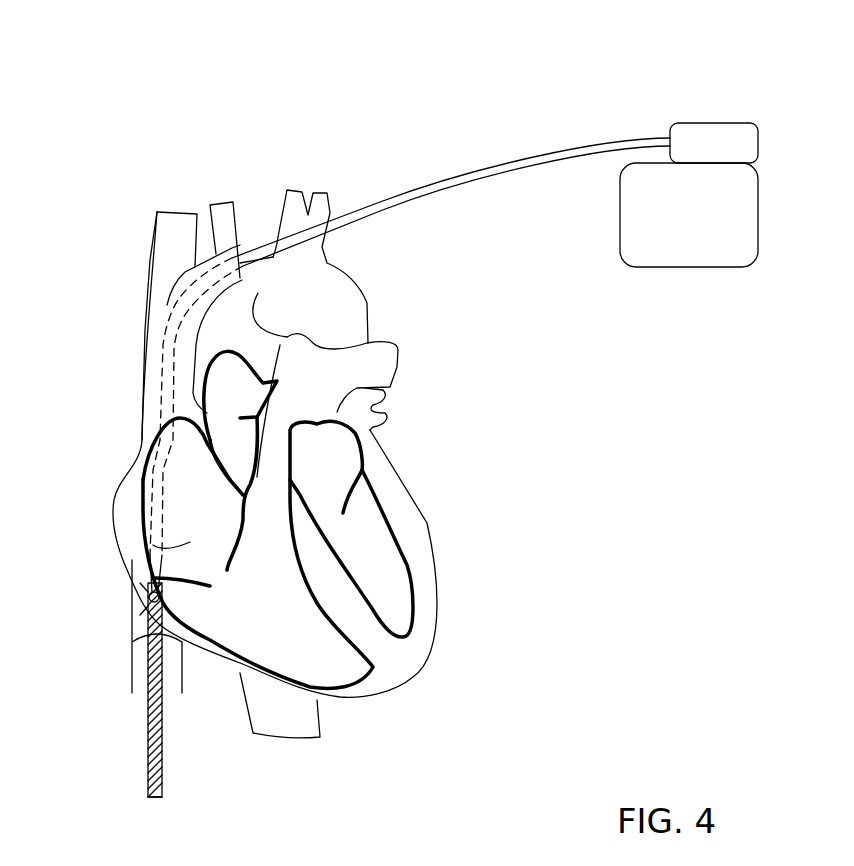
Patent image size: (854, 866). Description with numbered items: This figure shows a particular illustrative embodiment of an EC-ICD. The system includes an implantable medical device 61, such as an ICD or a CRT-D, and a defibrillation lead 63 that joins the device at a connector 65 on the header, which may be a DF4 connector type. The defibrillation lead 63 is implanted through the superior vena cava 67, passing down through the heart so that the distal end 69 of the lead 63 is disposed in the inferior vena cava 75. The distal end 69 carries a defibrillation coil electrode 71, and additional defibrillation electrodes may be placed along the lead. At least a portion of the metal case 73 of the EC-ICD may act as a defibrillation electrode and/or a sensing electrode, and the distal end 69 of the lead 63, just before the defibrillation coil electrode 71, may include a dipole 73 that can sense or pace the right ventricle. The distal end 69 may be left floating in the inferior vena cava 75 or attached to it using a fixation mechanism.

The implantable medical device 61 is at (707, 307).
The defibrillation lead 63 is at (605, 136).
The connector 65 is at (693, 123).
The superior vena cava 67 is at (143, 292).
The distal end 69 is at (150, 797).
The defibrillation coil electrode 71 is at (162, 728).
The metal case 73 is at (620, 232).
The inferior vena cava 75 is at (132, 655).